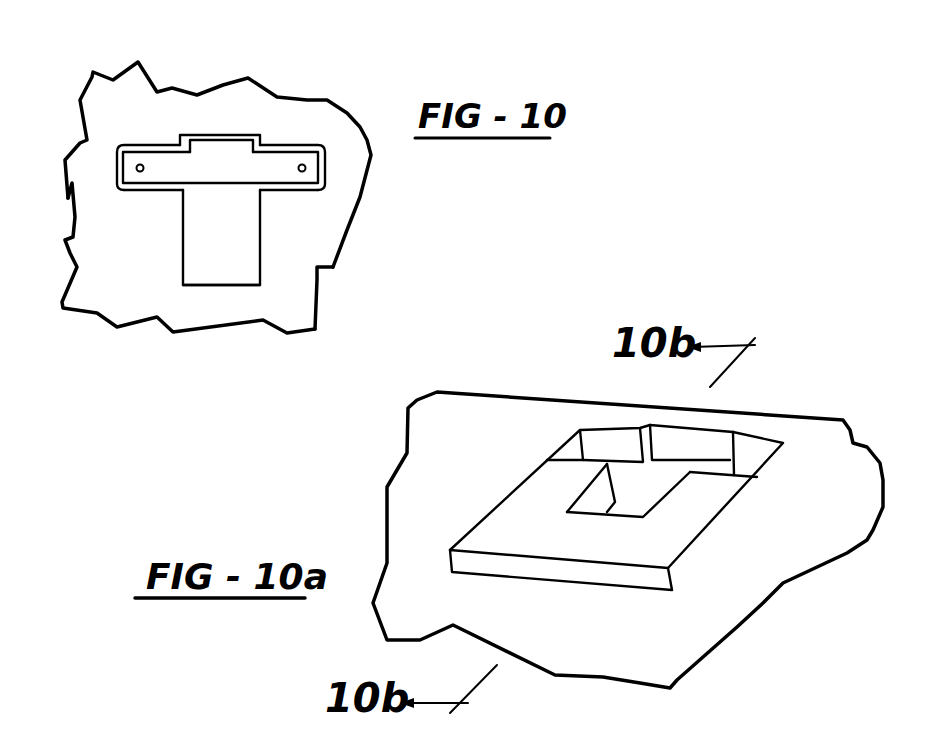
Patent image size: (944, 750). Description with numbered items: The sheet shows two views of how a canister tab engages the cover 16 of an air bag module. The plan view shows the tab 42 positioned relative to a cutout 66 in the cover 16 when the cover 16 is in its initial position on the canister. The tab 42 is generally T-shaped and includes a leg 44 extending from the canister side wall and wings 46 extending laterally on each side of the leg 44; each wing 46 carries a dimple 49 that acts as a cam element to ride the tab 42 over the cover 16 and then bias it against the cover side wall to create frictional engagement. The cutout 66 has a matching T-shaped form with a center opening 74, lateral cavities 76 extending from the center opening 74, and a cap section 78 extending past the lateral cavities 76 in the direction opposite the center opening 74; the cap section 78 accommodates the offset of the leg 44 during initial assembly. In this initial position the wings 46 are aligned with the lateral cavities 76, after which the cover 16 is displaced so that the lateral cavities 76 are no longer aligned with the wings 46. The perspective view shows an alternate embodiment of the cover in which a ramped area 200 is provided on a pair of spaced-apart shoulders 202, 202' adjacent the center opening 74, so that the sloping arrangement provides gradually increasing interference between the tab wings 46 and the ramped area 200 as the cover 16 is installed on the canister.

In FIG. 10, the cover 16 is at (323, 213).
In FIG. 10, the tab 42 is at (226, 196).
In FIG. 10, the leg 44 is at (223, 143).
In FIG. 10, the wings 46 is at (163, 172).
In FIG. 10, the dimples 49 is at (306, 166).
In FIG. 10, the cutout 66 is at (337, 270).
In FIG. 10, the center opening 74 is at (212, 222).
In FIG. 10A, the center opening 74 is at (650, 488).
In FIG. 10, the lateral cavities 76 is at (160, 148).
In FIG. 10, the cap section 78 is at (258, 140).
In FIG. 10A, the ramped area 200 is at (508, 528).
In FIG. 10A, the shoulder 202 is at (563, 412).
In FIG. 10A, the shoulder 202' is at (751, 545).